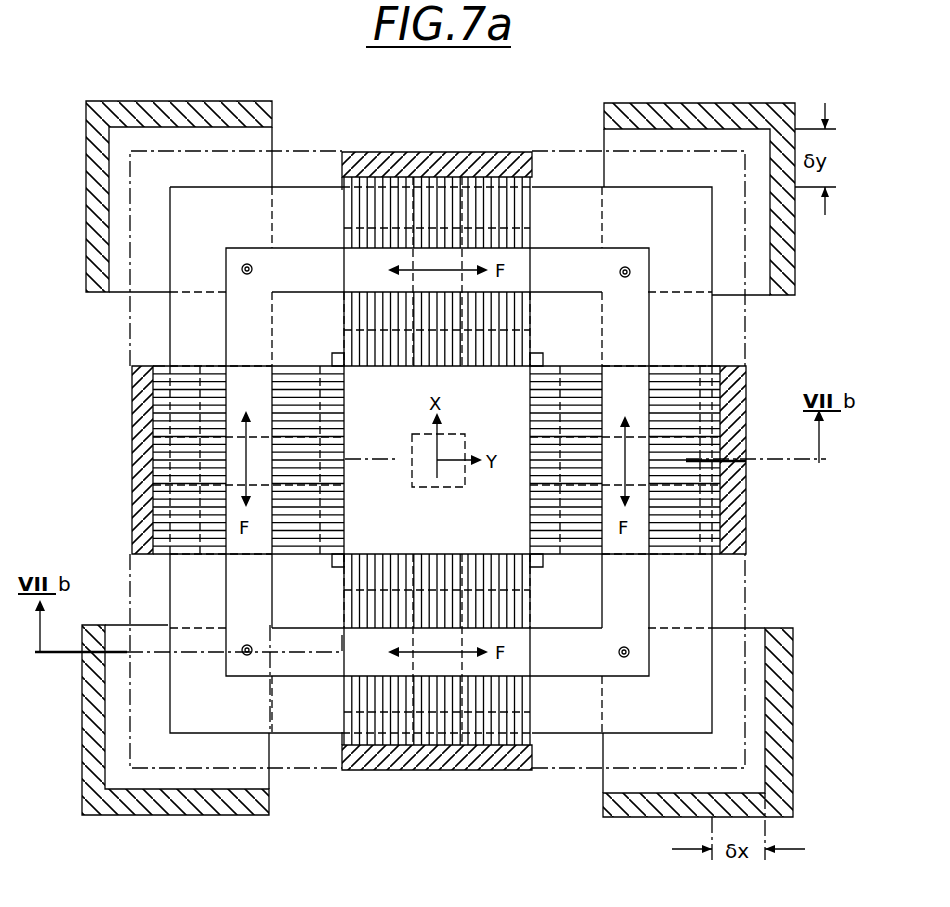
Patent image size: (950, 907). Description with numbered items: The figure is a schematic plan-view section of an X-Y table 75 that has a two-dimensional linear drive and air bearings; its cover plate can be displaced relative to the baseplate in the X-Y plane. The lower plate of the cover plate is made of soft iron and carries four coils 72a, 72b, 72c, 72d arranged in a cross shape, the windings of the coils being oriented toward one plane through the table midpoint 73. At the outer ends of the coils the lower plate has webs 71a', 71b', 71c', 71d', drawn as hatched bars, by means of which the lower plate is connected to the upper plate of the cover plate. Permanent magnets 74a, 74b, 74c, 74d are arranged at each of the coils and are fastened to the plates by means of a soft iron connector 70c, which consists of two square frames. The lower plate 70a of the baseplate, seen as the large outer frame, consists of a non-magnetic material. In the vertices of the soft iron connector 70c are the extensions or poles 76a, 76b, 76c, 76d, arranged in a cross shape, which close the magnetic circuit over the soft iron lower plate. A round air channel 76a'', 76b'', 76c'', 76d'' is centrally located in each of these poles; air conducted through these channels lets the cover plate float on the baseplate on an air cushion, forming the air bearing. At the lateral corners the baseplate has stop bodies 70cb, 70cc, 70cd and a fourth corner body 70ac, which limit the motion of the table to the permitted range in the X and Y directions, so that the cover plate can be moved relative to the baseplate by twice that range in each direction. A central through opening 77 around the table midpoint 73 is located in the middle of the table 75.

The lower plate of the baseplate 70a is at (288, 770).
The soft iron connector 70c is at (567, 655).
The stop body 70cd is at (122, 103).
The stop body 70cc is at (720, 112).
The stop body 70cb is at (785, 737).
The corner stopper piece 70ac is at (110, 807).
The web 71a' is at (437, 781).
The web 71b' is at (767, 460).
The web 71c' is at (446, 144).
The web 71d' is at (111, 460).
The coil 72a is at (335, 720).
The coil 72b is at (692, 372).
The coil 72c is at (345, 175).
The coil 72d is at (165, 368).
The table midpoint 73 is at (434, 461).
The permanent magnet 74a is at (445, 665).
The permanent magnet 74b is at (655, 470).
The permanent magnet 74c is at (438, 260).
The permanent magnet 74d is at (232, 455).
The X-Y table 75 is at (548, 106).
The extension or pole 76a is at (624, 754).
The extension or pole 76b is at (655, 154).
The extension or pole 76c is at (253, 164).
The extension or pole 76d is at (232, 751).
The air channel 76a'' is at (725, 613).
The air channel 76b'' is at (750, 257).
The air channel 76c'' is at (159, 301).
The air channel 76d'' is at (135, 678).
The central through opening 77 is at (443, 474).